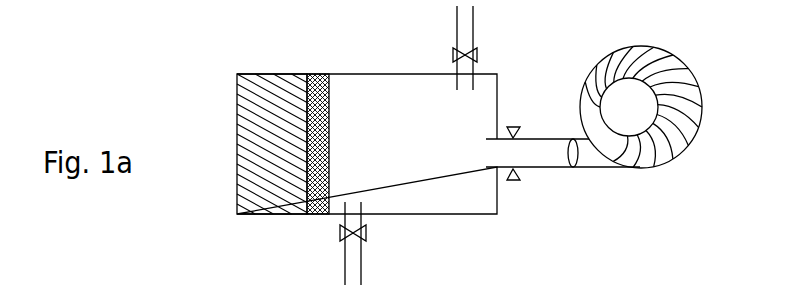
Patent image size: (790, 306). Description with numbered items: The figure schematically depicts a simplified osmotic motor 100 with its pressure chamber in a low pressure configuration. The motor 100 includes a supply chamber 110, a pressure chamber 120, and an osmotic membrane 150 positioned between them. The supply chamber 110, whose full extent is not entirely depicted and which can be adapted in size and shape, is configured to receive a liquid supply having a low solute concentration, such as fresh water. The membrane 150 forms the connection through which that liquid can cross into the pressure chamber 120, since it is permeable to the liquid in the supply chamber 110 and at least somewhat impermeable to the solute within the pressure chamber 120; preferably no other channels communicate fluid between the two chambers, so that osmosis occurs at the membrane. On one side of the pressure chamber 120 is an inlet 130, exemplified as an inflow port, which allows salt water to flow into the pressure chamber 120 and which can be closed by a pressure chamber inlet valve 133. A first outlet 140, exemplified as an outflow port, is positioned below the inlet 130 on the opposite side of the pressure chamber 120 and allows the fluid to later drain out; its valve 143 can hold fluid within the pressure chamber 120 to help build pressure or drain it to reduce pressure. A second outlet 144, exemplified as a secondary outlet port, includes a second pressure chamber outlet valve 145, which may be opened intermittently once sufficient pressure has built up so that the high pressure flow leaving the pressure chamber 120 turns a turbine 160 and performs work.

The motor 100 is at (162, 53).
The supply chamber 110 is at (266, 206).
The pressure chamber 120 is at (443, 203).
The inlet 130 is at (462, 34).
The valve 133 is at (478, 56).
The first outlet 140 is at (350, 272).
The valve 143 is at (366, 233).
The second outlet 144 is at (538, 157).
The valve 145 is at (515, 185).
The osmotic membrane 150 is at (316, 80).
The turbine 160 is at (620, 62).